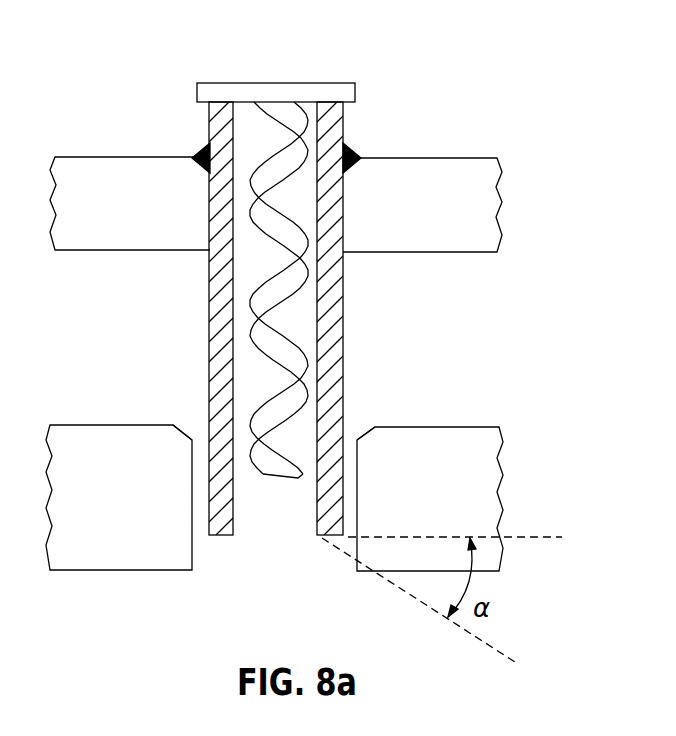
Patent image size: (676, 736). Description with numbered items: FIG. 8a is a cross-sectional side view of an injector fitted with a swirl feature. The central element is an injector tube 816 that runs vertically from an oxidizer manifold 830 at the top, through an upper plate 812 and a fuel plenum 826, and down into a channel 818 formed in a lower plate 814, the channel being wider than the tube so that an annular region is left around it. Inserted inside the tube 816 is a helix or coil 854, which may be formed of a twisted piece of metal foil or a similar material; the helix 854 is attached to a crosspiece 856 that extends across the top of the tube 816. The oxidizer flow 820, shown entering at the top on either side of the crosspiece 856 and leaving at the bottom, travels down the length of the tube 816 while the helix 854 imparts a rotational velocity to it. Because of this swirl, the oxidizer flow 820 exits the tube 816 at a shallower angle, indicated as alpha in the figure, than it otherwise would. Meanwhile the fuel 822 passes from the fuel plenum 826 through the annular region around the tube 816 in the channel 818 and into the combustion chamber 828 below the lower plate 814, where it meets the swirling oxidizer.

The upper right wall section 812 is at (443, 213).
The lower right wall section 814 is at (447, 490).
The tube 816 is at (318, 321).
The lower left wall section 818 is at (200, 485).
The oxidizer flow 820 is at (213, 70).
The chamfered edges 822 is at (192, 425).
The upper left wall section 826 is at (122, 300).
The lower chamber 828 is at (297, 612).
The upper chamber 830 is at (288, 30).
The helix 854 is at (270, 170).
The crosspiece 856 is at (350, 97).